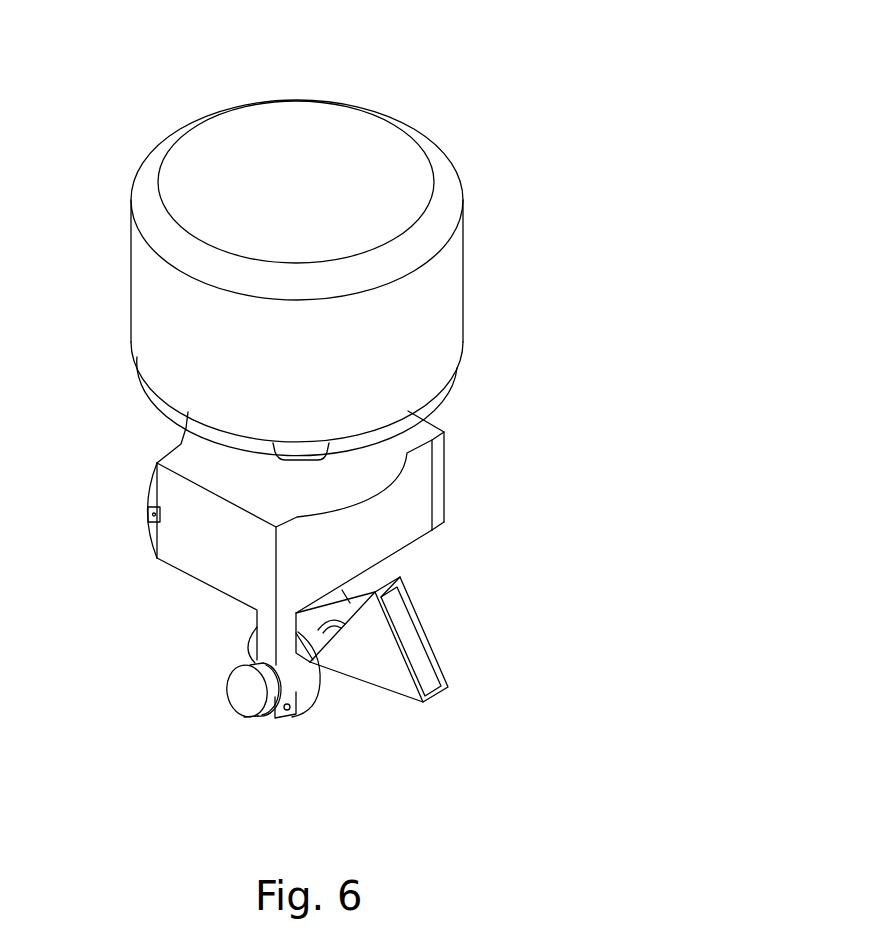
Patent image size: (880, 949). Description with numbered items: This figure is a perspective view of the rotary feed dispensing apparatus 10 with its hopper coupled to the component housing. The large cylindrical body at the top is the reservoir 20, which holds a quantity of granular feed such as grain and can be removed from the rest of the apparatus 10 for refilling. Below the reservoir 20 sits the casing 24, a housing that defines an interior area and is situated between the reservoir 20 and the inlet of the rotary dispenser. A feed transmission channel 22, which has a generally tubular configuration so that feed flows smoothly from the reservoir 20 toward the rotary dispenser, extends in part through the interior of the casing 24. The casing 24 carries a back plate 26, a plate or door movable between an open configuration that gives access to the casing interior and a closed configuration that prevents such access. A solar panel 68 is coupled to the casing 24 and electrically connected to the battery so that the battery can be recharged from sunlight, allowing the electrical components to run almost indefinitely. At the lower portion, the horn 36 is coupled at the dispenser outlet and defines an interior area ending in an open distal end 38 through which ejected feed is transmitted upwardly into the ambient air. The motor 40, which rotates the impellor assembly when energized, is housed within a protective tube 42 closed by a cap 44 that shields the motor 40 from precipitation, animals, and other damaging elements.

The rotary feed dispensing apparatus 10 is at (456, 76).
The reservoir 20 is at (453, 305).
The feed transmission channel 22 is at (342, 590).
The casing 24 is at (168, 590).
The back plate 26 is at (150, 493).
The horn 36 is at (367, 700).
The open distal end 38 is at (430, 641).
The motor 40 is at (252, 658).
The protective tube 42 is at (297, 687).
The cap 44 is at (240, 693).
The solar panel 68 is at (440, 473).